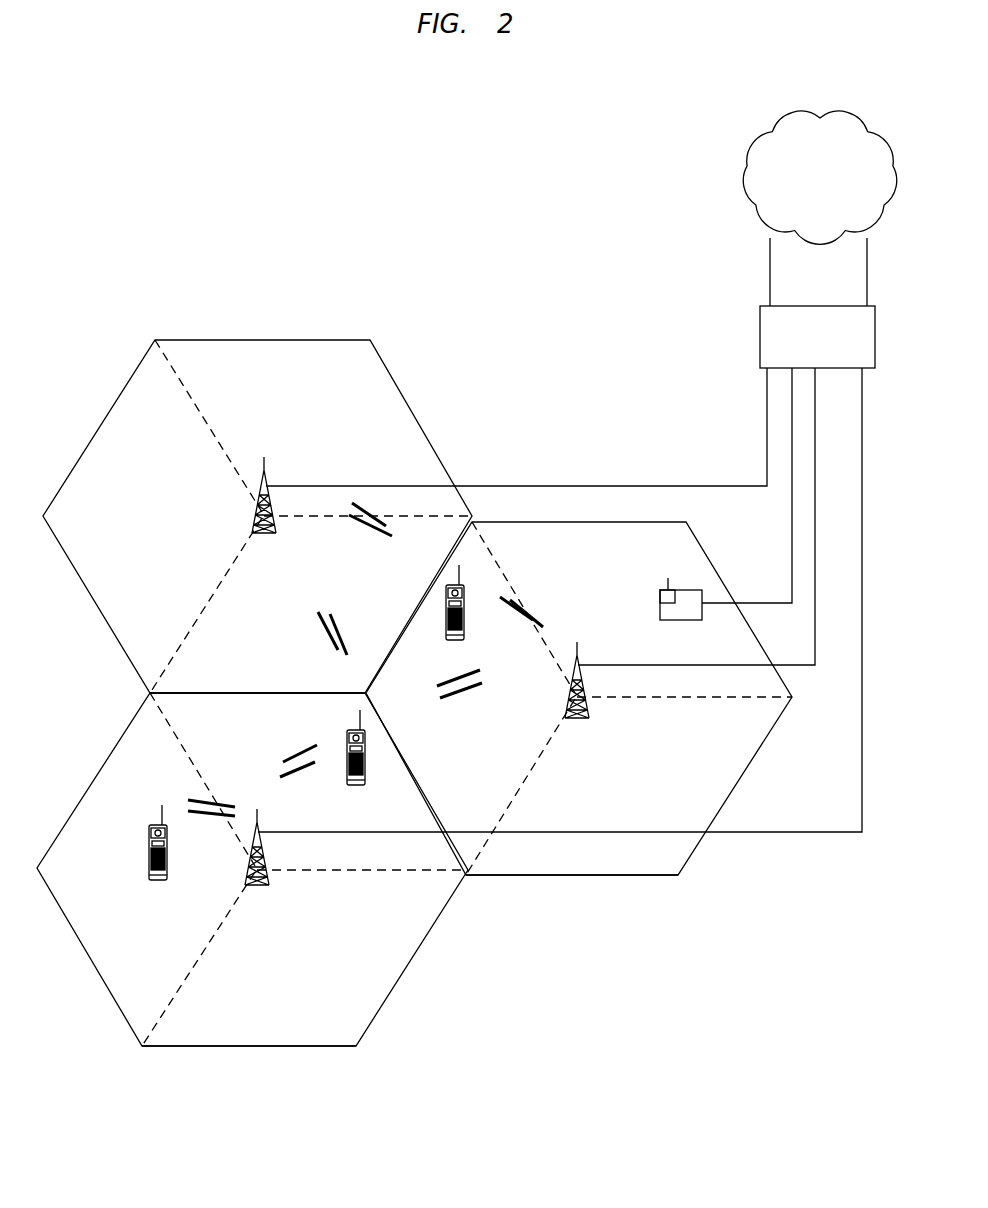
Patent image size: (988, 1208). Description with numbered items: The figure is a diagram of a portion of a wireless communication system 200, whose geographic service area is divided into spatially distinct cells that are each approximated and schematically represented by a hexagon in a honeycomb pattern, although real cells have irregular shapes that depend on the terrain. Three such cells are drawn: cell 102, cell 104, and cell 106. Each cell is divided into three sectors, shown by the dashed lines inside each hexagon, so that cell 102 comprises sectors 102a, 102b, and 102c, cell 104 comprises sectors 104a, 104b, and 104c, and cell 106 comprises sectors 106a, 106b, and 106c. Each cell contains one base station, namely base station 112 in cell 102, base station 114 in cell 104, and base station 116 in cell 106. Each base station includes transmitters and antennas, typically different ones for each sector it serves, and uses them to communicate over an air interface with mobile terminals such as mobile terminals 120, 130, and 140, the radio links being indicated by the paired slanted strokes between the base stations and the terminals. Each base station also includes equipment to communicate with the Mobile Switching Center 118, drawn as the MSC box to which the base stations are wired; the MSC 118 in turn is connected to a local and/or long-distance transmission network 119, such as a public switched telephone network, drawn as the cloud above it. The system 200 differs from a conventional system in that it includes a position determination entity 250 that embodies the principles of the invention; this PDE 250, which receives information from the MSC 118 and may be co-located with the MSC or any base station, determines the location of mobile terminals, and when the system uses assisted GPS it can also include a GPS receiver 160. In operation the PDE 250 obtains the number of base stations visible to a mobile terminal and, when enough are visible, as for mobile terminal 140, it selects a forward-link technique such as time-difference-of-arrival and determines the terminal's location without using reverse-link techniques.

The wireless communication system 200 is at (499, 226).
The cell 102 is at (272, 340).
The sector 102a is at (66, 524).
The sector 102b is at (247, 369).
The sector 102c is at (242, 683).
The cell 104 is at (585, 519).
The sector 104a is at (435, 797).
The sector 104b is at (567, 552).
The sector 104c is at (557, 867).
The cell 106 is at (237, 1047).
The sector 106a is at (52, 876).
The sector 106b is at (242, 722).
The sector 106c is at (223, 1039).
The base station 112 is at (264, 537).
The base station 114 is at (577, 721).
The base station 116 is at (257, 888).
The Mobile Switching Center 118 is at (757, 367).
The transmission network 119 is at (756, 231).
The mobile terminal 120 is at (162, 883).
The mobile terminal 130 is at (445, 640).
The mobile terminal 140 is at (351, 787).
The GPS receiver 160 is at (659, 602).
The position determination entity 250 is at (684, 622).